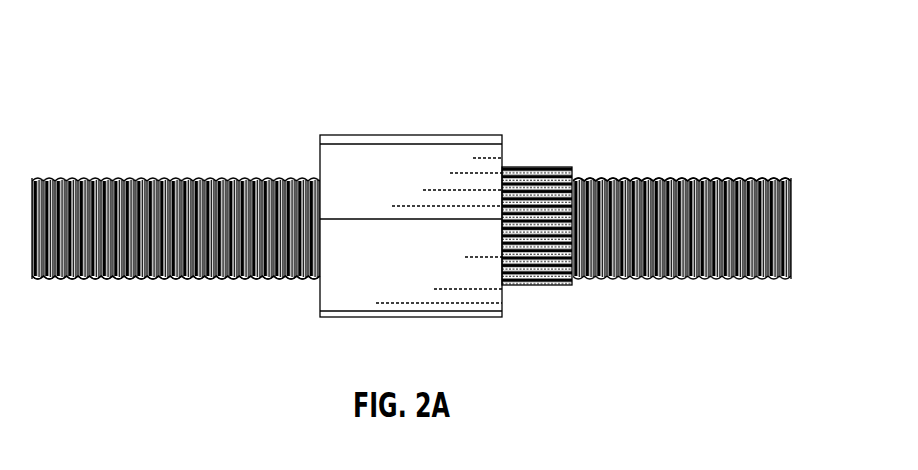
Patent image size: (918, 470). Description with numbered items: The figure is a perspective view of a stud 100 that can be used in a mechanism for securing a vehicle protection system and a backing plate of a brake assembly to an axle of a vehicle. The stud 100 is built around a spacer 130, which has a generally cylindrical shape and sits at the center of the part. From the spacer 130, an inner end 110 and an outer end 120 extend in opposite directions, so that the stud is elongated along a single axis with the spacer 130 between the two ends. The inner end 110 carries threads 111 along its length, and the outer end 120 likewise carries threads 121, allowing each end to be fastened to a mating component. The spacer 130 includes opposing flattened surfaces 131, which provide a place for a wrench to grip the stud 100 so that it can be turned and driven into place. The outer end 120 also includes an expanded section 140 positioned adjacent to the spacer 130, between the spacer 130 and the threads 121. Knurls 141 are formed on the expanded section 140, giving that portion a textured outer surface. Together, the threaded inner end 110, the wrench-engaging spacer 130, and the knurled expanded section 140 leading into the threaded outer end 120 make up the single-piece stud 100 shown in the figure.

The stud 100 is at (740, 62).
The inner end 110 is at (80, 162).
The threads 111 is at (86, 283).
The outer end 120 is at (722, 296).
The threads 121 is at (712, 178).
The spacer 130 is at (380, 80).
The flattened surfaces 131 is at (368, 158).
The expanded section 140 is at (538, 152).
The knurls 141 is at (548, 287).